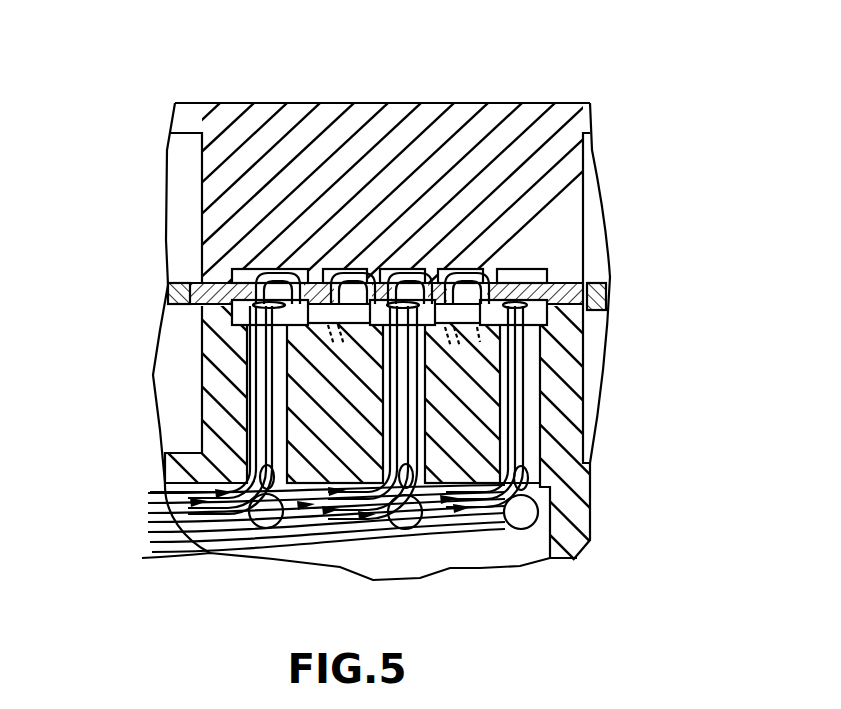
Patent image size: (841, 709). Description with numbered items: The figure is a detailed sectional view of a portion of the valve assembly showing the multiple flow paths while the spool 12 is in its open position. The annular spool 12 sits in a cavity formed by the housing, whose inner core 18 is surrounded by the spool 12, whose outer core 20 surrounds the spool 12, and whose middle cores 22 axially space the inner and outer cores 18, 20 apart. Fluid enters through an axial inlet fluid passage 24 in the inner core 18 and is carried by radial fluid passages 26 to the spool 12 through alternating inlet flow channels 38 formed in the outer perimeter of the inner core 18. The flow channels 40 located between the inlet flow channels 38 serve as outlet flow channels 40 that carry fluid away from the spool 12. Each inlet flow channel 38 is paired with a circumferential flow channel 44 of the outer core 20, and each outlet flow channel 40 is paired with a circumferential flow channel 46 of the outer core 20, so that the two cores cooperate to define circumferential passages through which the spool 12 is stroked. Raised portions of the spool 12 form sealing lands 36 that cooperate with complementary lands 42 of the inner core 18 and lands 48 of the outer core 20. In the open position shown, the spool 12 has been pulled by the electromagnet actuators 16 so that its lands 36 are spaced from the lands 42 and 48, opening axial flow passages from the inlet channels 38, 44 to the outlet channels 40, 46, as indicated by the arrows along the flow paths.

The spool 12 is at (190, 282).
The actuator 16 is at (182, 162).
The inner core 18 is at (575, 515).
The outer core 20 is at (315, 120).
The middle core 22 is at (168, 292).
The axial inlet fluid passage 24 is at (207, 535).
The radial fluid passage 26 is at (392, 470).
The sealing land 36 is at (299, 321).
The inlet flow channel 38 is at (232, 314).
The outlet flow channel 40 is at (343, 363).
The land 42 is at (440, 330).
The circumferential flow channel 44 is at (257, 270).
The circumferential flow channel 46 is at (333, 275).
The land 48 is at (488, 277).